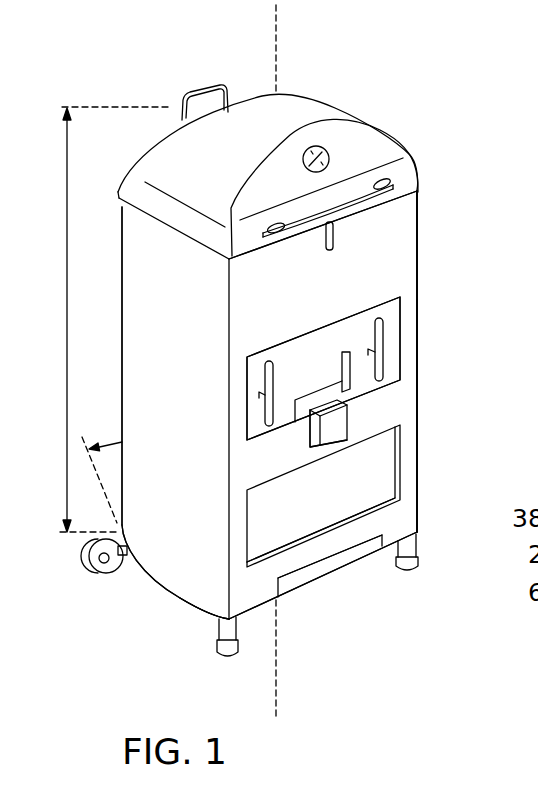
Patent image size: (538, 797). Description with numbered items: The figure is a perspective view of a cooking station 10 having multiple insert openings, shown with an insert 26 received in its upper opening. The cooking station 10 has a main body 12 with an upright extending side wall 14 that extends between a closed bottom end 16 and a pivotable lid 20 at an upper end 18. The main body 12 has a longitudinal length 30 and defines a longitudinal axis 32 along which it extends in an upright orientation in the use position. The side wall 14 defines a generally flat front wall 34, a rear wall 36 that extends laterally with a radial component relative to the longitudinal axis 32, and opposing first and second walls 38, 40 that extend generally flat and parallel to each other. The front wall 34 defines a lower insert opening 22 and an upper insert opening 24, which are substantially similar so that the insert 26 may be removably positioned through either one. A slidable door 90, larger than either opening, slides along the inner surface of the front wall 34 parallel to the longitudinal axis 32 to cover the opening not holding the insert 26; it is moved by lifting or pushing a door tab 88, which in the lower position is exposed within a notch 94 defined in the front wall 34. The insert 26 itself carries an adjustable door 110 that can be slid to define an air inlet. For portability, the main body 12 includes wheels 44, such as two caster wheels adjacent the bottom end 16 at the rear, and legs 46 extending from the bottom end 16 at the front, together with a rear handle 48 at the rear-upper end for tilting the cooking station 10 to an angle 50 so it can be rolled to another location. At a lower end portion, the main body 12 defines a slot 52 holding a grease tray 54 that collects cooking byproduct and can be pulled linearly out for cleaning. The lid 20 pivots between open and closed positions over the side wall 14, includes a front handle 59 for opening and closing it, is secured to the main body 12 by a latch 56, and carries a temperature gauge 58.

The cooking station 10 is at (428, 82).
The main body 12 is at (428, 216).
The upright extending side wall 14 is at (420, 260).
The closed bottom end 16 is at (263, 610).
The upper end 18 is at (290, 102).
The lid 20 is at (345, 102).
The lower insert opening 22 is at (399, 463).
The upper insert opening 24 is at (401, 333).
The insert 26 is at (410, 362).
The longitudinal length 30 is at (67, 160).
The longitudinal axis 32 is at (276, 12).
The front wall 34 is at (402, 278).
The rear wall 36 is at (121, 273).
The first wall 38 is at (173, 530).
The second wall 40 is at (418, 402).
The wheels 44 is at (100, 567).
The legs 46 is at (219, 632).
The rear handle 48 is at (206, 90).
The angle 50 is at (110, 441).
The slot 52 is at (380, 543).
The grease tray 54 is at (343, 565).
The latch 56 is at (337, 235).
The temperature gauge 58 is at (330, 158).
The front handle 59 is at (418, 187).
The door tab 88 is at (341, 433).
The slidable door 90 is at (368, 494).
The notch 94 is at (312, 437).
The adjustable door 110 is at (345, 383).